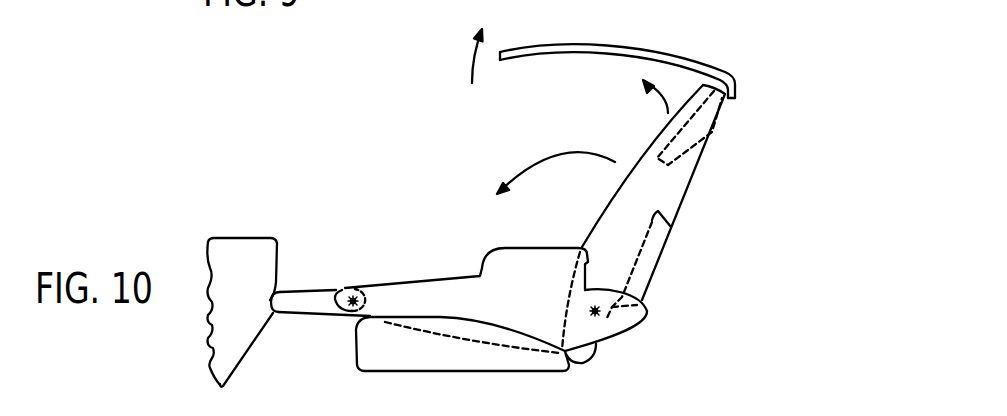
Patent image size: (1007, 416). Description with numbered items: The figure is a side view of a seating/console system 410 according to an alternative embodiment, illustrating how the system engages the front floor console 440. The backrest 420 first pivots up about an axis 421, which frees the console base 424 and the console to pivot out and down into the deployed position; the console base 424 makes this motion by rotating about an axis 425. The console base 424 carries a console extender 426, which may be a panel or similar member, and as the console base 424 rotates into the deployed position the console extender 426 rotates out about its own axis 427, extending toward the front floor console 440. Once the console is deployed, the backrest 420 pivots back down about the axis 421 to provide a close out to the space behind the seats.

The seating/console system 410 is at (229, 139).
The backrest 420 is at (591, 43).
The axis 421 is at (733, 99).
The console base 424 is at (441, 287).
The axis 425 is at (597, 313).
The console extender 426 is at (288, 307).
The axis 427 is at (352, 301).
The front floor console 440 is at (245, 247).